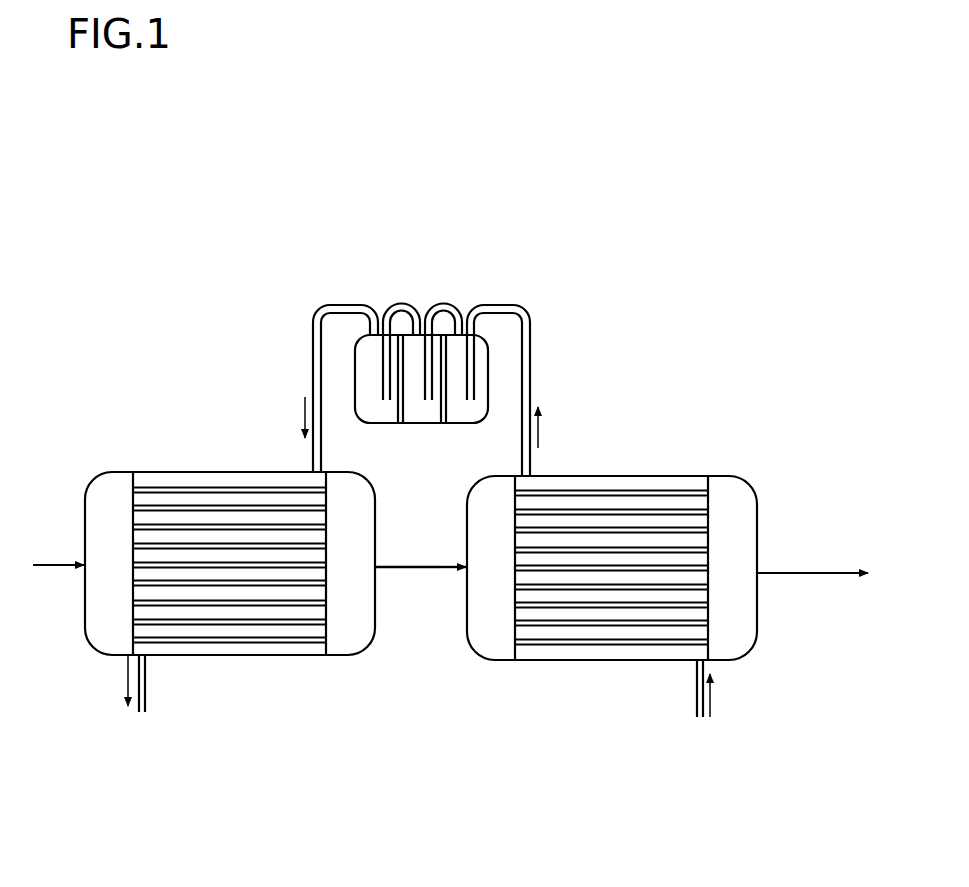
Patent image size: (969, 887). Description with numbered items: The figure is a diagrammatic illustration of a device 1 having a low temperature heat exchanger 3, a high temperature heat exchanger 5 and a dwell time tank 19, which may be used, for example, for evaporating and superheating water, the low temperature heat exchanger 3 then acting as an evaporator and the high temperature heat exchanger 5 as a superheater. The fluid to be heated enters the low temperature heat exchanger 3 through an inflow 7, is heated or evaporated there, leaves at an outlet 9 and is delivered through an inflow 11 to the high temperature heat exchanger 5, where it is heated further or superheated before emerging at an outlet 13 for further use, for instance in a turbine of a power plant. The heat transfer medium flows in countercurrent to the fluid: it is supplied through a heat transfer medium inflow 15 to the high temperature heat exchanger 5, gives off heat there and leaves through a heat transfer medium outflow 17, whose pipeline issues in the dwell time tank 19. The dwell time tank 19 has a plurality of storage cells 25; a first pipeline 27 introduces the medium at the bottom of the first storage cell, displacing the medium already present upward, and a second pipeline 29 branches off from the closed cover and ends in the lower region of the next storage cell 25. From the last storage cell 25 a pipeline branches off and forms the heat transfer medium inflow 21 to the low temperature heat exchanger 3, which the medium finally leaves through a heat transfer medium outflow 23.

The device 1 is at (182, 413).
The low temperature heat exchanger 3 is at (115, 472).
The high temperature heat exchanger 5 is at (688, 475).
The inflow 7 is at (55, 560).
The outlet 9 is at (375, 570).
The inflow 11 is at (462, 573).
The outlet 13 is at (815, 572).
The heat transfer medium inflow 15 is at (695, 695).
The heat transfer medium outflow 17 is at (532, 390).
The dwell time tank 19 is at (455, 293).
The heat transfer medium inflow 21 is at (312, 462).
The heat transfer medium outflow 23 is at (146, 682).
The storage cells 25 is at (460, 414).
The first pipeline 27 is at (488, 366).
The second pipeline 29 is at (440, 305).